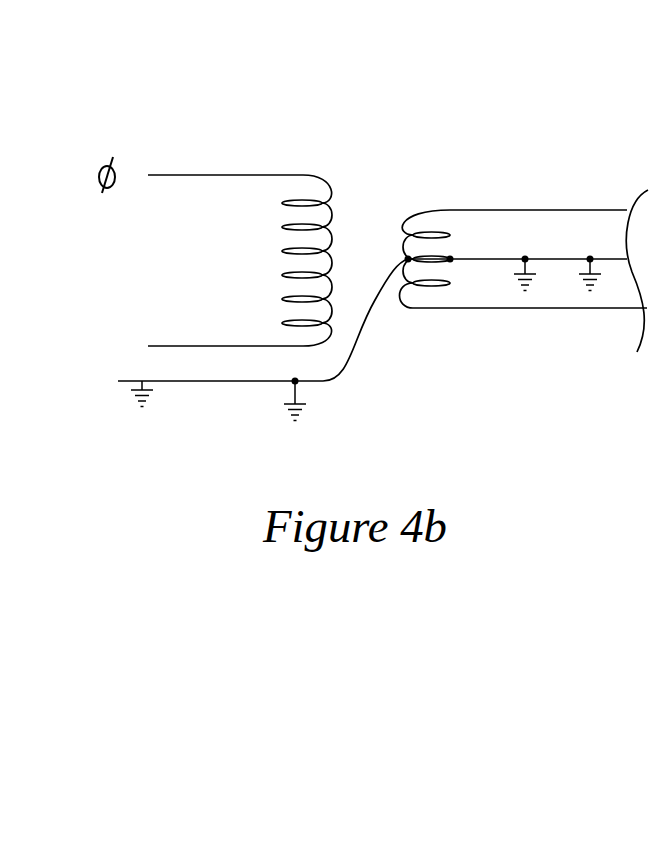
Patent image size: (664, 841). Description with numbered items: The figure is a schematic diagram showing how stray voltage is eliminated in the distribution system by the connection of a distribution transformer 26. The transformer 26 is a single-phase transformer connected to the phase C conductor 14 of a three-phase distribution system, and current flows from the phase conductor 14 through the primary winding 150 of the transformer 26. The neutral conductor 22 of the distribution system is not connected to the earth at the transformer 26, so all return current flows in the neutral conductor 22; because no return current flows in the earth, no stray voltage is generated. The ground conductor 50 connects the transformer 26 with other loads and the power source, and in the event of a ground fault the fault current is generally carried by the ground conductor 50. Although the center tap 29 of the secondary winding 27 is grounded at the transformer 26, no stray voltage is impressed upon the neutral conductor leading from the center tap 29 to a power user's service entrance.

The phase C conductor 14 is at (185, 132).
The distribution transformer 26 is at (311, 114).
The primary winding 150 is at (330, 213).
The secondary winding 27 is at (448, 232).
The neutral conductor 22 is at (185, 346).
The ground conductor 50 is at (207, 383).
The center tap 29 is at (452, 260).